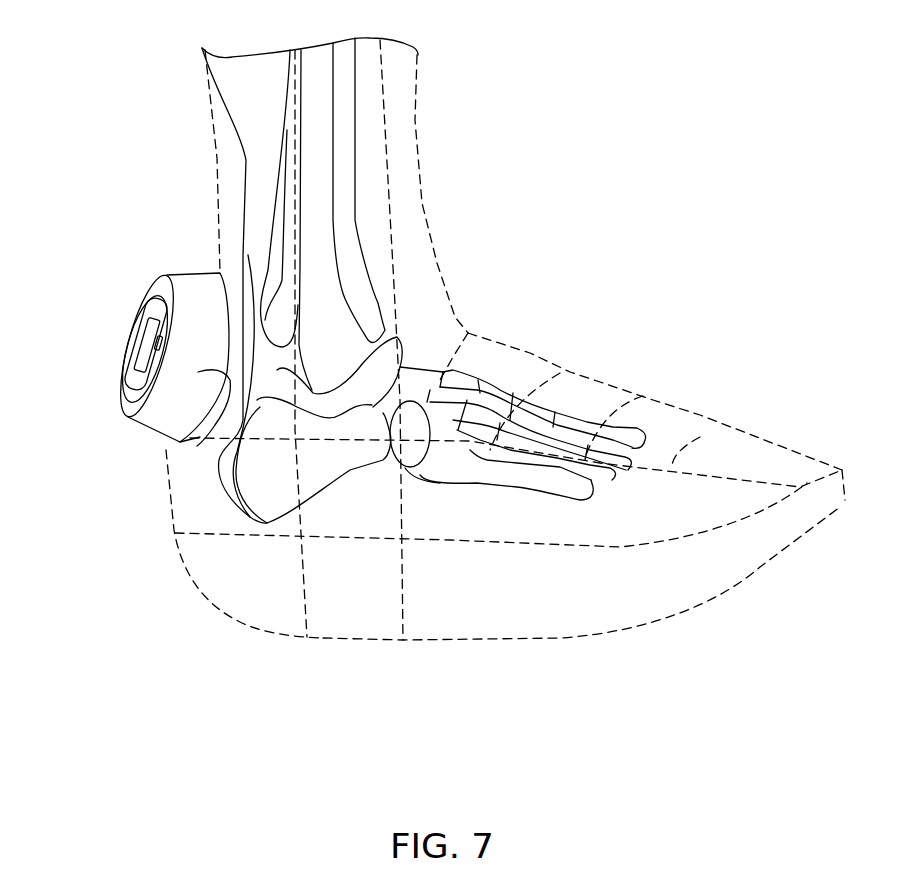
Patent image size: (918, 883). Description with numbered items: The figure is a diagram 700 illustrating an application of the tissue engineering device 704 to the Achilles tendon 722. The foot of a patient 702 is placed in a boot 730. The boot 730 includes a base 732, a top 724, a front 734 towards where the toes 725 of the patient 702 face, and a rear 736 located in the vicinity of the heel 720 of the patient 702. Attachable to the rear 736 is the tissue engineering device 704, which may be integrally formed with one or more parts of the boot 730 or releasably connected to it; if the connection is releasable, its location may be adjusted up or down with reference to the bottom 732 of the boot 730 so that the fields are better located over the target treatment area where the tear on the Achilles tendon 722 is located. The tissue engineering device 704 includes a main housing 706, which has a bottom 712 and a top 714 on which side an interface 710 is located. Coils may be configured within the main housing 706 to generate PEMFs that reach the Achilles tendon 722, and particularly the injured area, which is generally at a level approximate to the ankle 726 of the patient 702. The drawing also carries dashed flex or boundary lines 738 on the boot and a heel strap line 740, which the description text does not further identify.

The diagram 700 is at (693, 103).
The patient 702 is at (425, 77).
The tissue engineering device 704 is at (107, 413).
The main housing 706 is at (185, 276).
The interface 710 is at (147, 347).
The bottom 712 is at (205, 431).
The top 714 is at (163, 293).
The heel 720 is at (253, 497).
The Achilles tendon 722 is at (257, 267).
The top 724 is at (767, 467).
The toes 725 is at (613, 430).
The ankle 726 is at (355, 340).
The boot 730 is at (348, 650).
The base 732 is at (585, 632).
The front 734 is at (847, 522).
The rear 736 is at (210, 597).
The flex lines 738 is at (525, 358).
The heel strap 740 is at (162, 455).